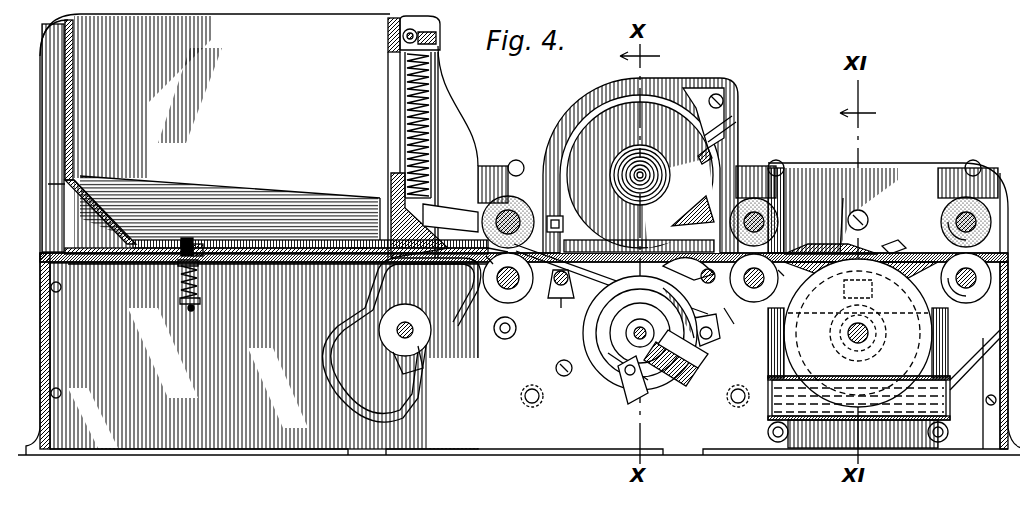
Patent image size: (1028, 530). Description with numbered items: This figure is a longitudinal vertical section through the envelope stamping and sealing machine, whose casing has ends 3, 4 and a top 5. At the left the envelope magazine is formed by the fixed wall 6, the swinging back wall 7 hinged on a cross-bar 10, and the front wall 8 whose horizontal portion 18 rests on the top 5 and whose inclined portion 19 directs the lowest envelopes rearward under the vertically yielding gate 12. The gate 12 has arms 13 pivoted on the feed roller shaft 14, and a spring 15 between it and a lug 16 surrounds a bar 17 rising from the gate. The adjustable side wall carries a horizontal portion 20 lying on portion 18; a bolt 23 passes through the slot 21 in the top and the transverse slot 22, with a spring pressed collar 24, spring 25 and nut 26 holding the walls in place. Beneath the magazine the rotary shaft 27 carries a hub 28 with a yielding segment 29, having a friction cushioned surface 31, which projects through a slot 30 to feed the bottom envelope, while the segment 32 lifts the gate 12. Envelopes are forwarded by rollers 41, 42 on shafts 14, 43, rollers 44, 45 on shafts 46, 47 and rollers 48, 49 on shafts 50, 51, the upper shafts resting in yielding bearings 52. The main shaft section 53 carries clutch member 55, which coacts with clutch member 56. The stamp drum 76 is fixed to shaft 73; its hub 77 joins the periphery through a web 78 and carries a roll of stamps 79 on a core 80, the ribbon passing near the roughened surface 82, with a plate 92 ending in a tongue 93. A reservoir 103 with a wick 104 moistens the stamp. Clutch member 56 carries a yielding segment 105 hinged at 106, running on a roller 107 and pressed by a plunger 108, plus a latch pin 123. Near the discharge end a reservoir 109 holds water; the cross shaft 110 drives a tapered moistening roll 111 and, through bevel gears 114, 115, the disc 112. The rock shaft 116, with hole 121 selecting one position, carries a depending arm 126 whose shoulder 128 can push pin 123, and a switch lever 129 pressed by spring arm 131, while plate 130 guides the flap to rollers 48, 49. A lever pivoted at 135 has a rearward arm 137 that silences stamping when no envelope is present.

The end 3 is at (32, 312).
The end 4 is at (990, 372).
The top 5 is at (489, 245).
The fixed wall 6 is at (227, 128).
The swinging back wall 7 is at (385, 95).
The longitudinally adjustable front wall 8 is at (58, 102).
The cross-bar 10 is at (382, 28).
The vertically yielding gate 12 is at (426, 215).
The arms 13 is at (450, 218).
The feed roller shaft 14 is at (478, 204).
The spring 15 is at (418, 150).
The lug 16 is at (424, 34).
The bar 17 is at (408, 22).
The horizontal portion 18 is at (100, 246).
The inclined portion 19 is at (80, 191).
The horizontal portion 20 is at (80, 222).
The elongated slot 21 is at (105, 262).
The transversely elongated slot 22 is at (178, 232).
The bolt 23 is at (195, 236).
The spring pressed collar 24 is at (175, 256).
The spring 25 is at (192, 274).
The nut 26 is at (182, 298).
The rotary shaft 27 is at (408, 336).
The hub 28 is at (392, 330).
The yielding segment 29 is at (423, 292).
The slot 30 is at (352, 240).
The friction cushioned surface 31 is at (486, 320).
The segment 32 is at (368, 372).
The roller 41 is at (493, 173).
The roller 42 is at (512, 292).
The shaft 43 is at (507, 300).
The roller 44 is at (760, 196).
The roller 45 is at (772, 282).
The shaft 46 is at (770, 212).
The shaft 47 is at (754, 287).
The roller 48 is at (934, 210).
The roller 49 is at (966, 278).
The shaft 50 is at (938, 236).
The shaft 51 is at (962, 294).
The yielding bearings 52 is at (510, 154).
The main shaft section 53 is at (620, 318).
The clutch member 55 is at (590, 340).
The clutch member 56 is at (676, 361).
The shaft 73 is at (612, 178).
The stamp drum 76 is at (600, 102).
The hub 77 is at (626, 167).
The web 78 is at (639, 224).
The roll of stamps 79 is at (632, 150).
The core 80 is at (616, 158).
The roughened exterior surface 82 is at (704, 132).
The plate 92 is at (690, 148).
The tongue 93 is at (680, 80).
The reservoir 103 is at (560, 250).
The wick 104 is at (578, 216).
The yielding segment 105 is at (672, 382).
The hinge 106 is at (612, 380).
The roller 107 is at (548, 360).
The spring pressed plunger 108 is at (731, 385).
The reservoir 109 is at (760, 408).
The cross shaft 110 is at (860, 332).
The tapered moistening roll 111 is at (858, 333).
The horizontal disc 112 is at (892, 258).
The bevel gear 114 is at (822, 320).
The bevel gear 115 is at (836, 300).
The rock shaft 116 is at (689, 268).
The hole 121 is at (559, 307).
The pin 123 is at (617, 366).
The depending arm 126 is at (725, 330).
The shoulder 128 is at (739, 323).
The switch lever 129 is at (860, 214).
The plate 130 is at (843, 219).
The spring arm 131 is at (874, 218).
The pivot 135 is at (561, 286).
The rearwardly extended arm 137 is at (636, 280).